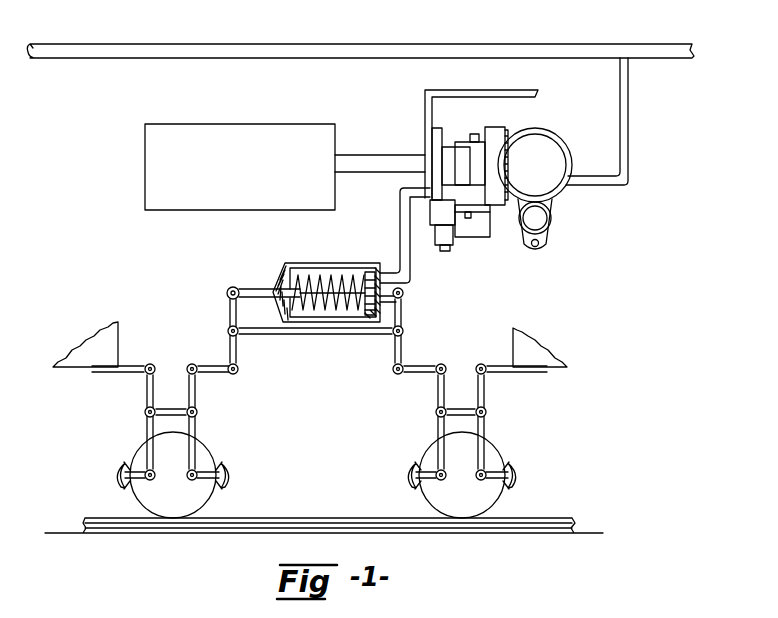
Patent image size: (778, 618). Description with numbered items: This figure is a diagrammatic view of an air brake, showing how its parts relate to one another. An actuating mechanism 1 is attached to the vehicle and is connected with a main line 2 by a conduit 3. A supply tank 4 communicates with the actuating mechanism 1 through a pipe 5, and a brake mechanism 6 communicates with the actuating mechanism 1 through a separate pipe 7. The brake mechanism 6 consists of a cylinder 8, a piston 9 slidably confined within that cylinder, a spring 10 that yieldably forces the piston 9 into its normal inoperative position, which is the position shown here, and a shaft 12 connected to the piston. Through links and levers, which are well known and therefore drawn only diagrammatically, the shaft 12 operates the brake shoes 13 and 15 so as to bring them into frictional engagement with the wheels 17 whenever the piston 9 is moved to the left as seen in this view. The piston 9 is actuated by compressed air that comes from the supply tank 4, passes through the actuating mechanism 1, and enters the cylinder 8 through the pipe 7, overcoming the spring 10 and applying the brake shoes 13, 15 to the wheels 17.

The actuating mechanism 1 is at (567, 124).
The main line 2 is at (528, 44).
The conduit 3 is at (629, 131).
The supply tank 4 is at (288, 128).
The pipe 5 is at (378, 162).
The brake mechanism 6 is at (329, 257).
The pipe 7 is at (400, 219).
The cylinder 8 is at (352, 265).
The piston 9 is at (358, 323).
The spring 10 is at (307, 278).
The shaft 12 is at (253, 289).
The brake shoe 13 is at (118, 483).
The brake shoe 15 is at (226, 485).
The wheels 17 is at (207, 456).